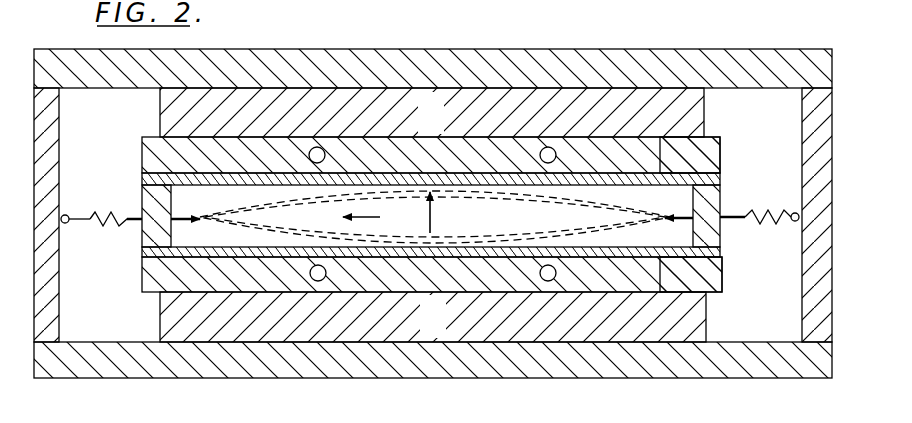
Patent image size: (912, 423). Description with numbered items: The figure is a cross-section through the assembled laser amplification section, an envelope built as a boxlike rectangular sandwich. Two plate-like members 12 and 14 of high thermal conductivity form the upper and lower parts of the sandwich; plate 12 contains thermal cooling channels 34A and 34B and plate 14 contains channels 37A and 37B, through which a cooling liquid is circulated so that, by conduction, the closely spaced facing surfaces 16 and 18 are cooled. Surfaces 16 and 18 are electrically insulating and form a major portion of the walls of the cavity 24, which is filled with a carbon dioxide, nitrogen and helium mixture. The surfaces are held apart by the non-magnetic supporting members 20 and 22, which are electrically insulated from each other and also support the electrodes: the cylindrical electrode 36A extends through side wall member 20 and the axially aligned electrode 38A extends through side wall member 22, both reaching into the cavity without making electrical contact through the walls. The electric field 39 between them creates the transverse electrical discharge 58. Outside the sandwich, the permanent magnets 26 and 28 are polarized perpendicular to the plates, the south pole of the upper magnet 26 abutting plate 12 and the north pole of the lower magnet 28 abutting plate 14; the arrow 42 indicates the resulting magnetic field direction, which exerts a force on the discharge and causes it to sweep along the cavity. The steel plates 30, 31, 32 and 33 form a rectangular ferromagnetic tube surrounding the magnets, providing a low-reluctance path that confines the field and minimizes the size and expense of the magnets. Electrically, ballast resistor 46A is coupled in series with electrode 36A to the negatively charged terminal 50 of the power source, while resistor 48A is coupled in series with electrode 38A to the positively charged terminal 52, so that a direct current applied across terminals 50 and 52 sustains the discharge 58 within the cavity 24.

The plate-like member 12 is at (148, 140).
The plate-like member 14 is at (156, 285).
The facing surface 16 is at (694, 184).
The facing surface 18 is at (700, 258).
The supporting member 20 is at (150, 234).
The supporting member 22 is at (712, 234).
The cavity 24 is at (252, 204).
The permanent magnet 26 is at (692, 108).
The permanent magnet 28 is at (692, 313).
The steel plate 30 is at (672, 62).
The steel plate 31 is at (78, 124).
The steel plate 32 is at (685, 372).
The steel plate 33 is at (802, 133).
The thermal cooling channel 34A is at (309, 155).
The thermal cooling channel 34B is at (540, 155).
The electrode 36A is at (184, 222).
The thermal cooling channel 37A is at (310, 273).
The thermal cooling channel 37B is at (540, 273).
The electrode 38A is at (673, 216).
The electric field 39 is at (380, 217).
The arrow 42 is at (431, 222).
The resistor 46A is at (118, 210).
The resistor 48A is at (770, 208).
The terminal 50 is at (66, 224).
The terminal 52 is at (782, 233).
The electrical discharge 58 is at (556, 196).